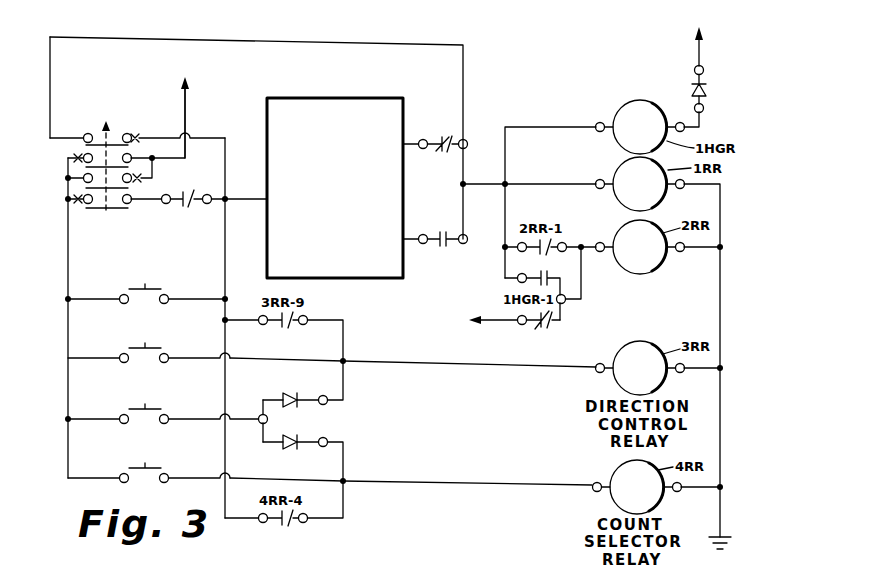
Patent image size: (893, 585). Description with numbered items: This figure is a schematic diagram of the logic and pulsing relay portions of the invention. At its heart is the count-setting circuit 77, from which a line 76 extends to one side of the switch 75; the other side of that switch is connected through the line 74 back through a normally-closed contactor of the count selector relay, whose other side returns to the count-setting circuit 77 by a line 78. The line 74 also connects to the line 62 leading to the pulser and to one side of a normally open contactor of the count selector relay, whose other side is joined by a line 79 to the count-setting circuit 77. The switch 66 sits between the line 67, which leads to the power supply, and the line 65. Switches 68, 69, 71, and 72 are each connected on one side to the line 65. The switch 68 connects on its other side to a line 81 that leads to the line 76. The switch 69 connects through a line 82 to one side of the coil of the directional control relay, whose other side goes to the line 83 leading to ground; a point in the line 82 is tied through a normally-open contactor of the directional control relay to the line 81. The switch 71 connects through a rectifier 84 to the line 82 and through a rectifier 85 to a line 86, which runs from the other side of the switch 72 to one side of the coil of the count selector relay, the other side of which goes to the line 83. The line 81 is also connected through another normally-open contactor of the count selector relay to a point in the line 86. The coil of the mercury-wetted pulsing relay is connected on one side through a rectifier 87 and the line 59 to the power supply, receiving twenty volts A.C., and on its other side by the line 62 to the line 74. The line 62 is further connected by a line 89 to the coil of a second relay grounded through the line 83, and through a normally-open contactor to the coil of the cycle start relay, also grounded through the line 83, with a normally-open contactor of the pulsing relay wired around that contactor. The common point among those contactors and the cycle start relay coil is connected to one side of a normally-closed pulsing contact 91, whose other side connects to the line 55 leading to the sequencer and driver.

The line 55 is at (486, 324).
The line 59 is at (705, 68).
The line 62 is at (549, 126).
The line 65 is at (68, 252).
The switch 66 is at (119, 148).
The line 67 is at (188, 99).
The switch 68 is at (127, 292).
The switch 69 is at (122, 351).
The switch 71 is at (120, 411).
The switch 72 is at (121, 470).
The line 74 is at (393, 44).
The switch 75 is at (74, 146).
The line 76 is at (245, 207).
The count-setting circuit 77 is at (307, 97).
The line 78 is at (412, 150).
The line 79 is at (412, 245).
The line 81 is at (226, 258).
The line 82 is at (247, 353).
The line 83 is at (722, 284).
The rectifier 84 is at (289, 397).
The rectifier 85 is at (290, 452).
The line 86 is at (400, 483).
The rectifier 87 is at (708, 90).
The line 89 is at (546, 183).
The pulsing contact 91 is at (545, 328).